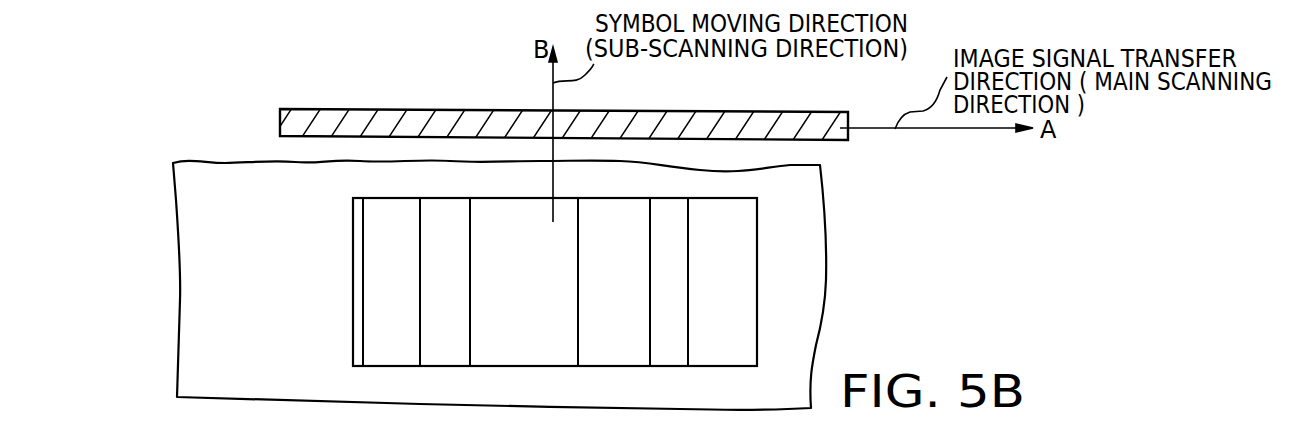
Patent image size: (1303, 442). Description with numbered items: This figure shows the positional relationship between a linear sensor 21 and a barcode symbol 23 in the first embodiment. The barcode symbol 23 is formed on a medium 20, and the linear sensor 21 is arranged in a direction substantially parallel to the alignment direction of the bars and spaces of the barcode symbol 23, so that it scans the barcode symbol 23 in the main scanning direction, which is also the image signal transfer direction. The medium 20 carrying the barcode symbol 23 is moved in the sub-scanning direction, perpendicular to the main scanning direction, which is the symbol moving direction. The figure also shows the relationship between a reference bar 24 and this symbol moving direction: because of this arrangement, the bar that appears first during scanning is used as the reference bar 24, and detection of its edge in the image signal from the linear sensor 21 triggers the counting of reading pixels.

The medium 20 is at (178, 319).
The linear sensor 21 is at (773, 140).
The barcode symbol 23 is at (757, 227).
The reference bar 24 is at (352, 292).